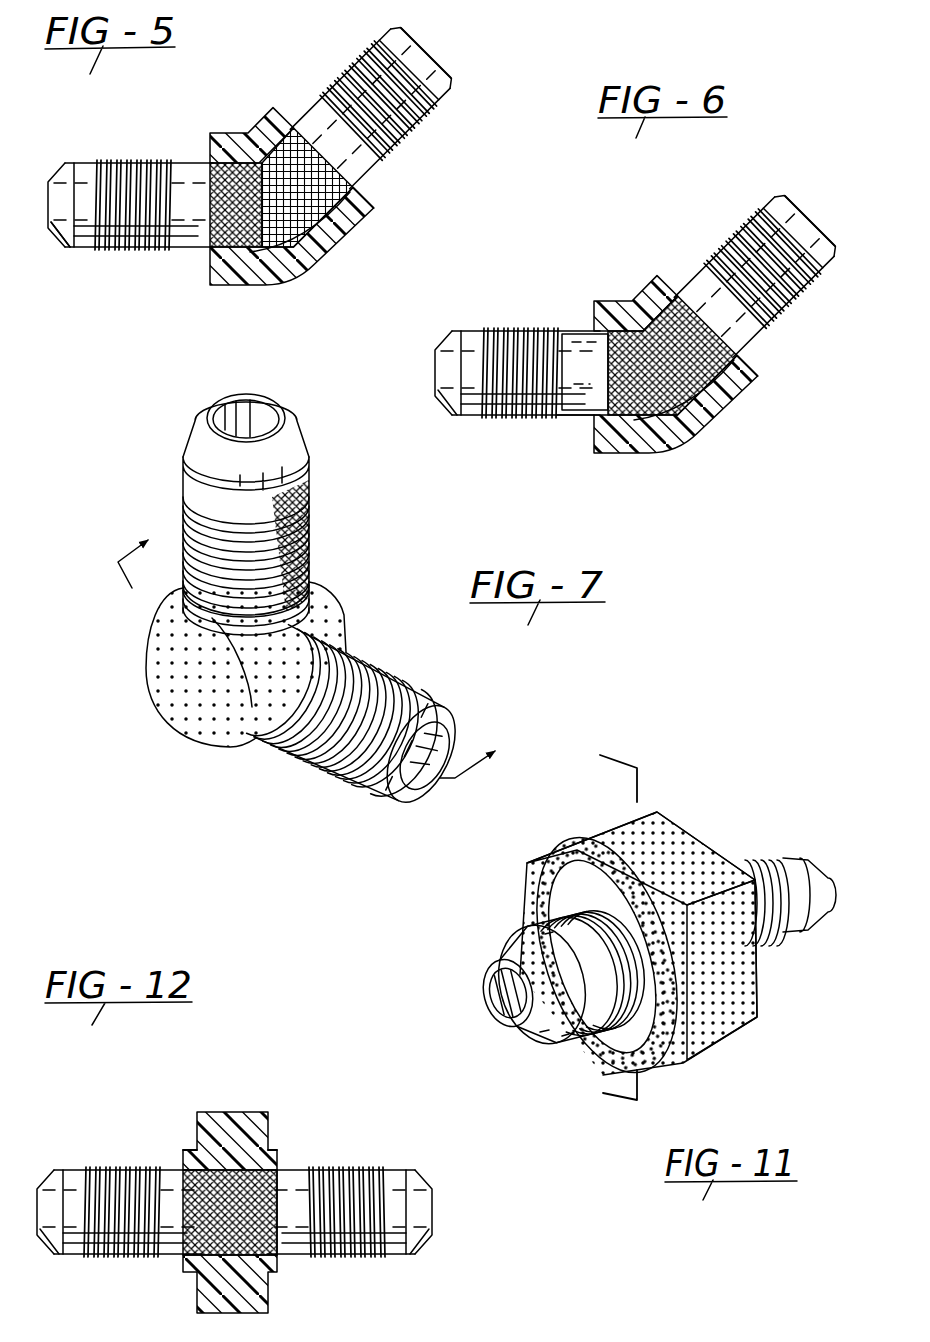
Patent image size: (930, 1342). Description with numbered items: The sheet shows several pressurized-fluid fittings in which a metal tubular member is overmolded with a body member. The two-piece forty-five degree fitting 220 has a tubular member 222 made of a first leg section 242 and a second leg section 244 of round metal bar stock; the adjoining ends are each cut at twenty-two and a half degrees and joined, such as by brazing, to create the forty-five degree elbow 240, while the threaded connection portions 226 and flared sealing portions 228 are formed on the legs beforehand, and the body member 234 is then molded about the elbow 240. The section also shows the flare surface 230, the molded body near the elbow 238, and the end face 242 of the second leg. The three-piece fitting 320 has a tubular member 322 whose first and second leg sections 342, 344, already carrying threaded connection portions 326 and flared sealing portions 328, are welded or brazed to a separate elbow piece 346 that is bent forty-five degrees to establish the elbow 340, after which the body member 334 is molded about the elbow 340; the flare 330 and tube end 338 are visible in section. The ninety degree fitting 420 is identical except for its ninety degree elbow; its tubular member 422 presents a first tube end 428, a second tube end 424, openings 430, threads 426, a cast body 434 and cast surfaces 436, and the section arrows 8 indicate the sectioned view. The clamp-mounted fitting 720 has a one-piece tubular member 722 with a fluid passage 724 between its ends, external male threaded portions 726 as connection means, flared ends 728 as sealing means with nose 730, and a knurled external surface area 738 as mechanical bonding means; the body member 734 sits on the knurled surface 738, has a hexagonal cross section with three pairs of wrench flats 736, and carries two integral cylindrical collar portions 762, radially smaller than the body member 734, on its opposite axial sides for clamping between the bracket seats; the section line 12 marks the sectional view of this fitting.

In FIG. 5, the fitting 220 is at (294, 176).
In FIG. 5, the two-piece tubular member 222 is at (299, 111).
In FIG. 5, the threaded connection portions 226 is at (430, 110).
In FIG. 5, the flared sealing portions 228 is at (48, 156).
In FIG. 5, the flare nose 230 is at (62, 190).
In FIG. 5, the body member 234 is at (377, 210).
In FIG. 5, the body bottom wall 238 is at (246, 276).
In FIG. 5, the forty-five degree elbow 240 is at (337, 232).
In FIG. 5, the first leg section 242 is at (447, 72).
In FIG. 5, the second leg section 244 is at (80, 248).
In FIG. 6, the fitting 320 is at (609, 327).
In FIG. 6, the three-piece tubular member 322 is at (695, 282).
In FIG. 6, the threaded connection portions 326 is at (800, 304).
In FIG. 6, the flared sealing portions 328 is at (438, 412).
In FIG. 6, the flare nose 330 is at (783, 197).
In FIG. 6, the body member 334 is at (737, 403).
In FIG. 6, the tube insert 338 is at (593, 316).
In FIG. 6, the forty-five degree elbow 340 is at (720, 418).
In FIG. 6, the first leg section 342 is at (781, 199).
In FIG. 6, the second leg section 344 is at (578, 420).
In FIG. 6, the elbow piece 346 is at (675, 445).
In FIG. 7, the fitting 420 is at (289, 599).
In FIG. 7, the tubular member 422 is at (312, 435).
In FIG. 7, the second tube end 424 is at (428, 782).
In FIG. 7, the threads 426 is at (316, 528).
In FIG. 7, the first tube end 428 is at (194, 408).
In FIG. 7, the opening 430 is at (207, 415).
In FIG. 7, the body 434 is at (143, 662).
In FIG. 7, the cast surface 436 is at (330, 592).
In FIG. 7, the section line 8 is at (313, 642).
In FIG. 11, the fitting 720 is at (625, 919).
In FIG. 12, the fitting 720 is at (263, 1170).
In FIG. 11, the one-piece tubular member 722 is at (603, 803).
In FIG. 12, the one-piece tubular member 722 is at (283, 1165).
In FIG. 11, the fluid passage 724 is at (498, 1012).
In FIG. 11, the external male threaded portions 726 is at (525, 925).
In FIG. 12, the external male threaded portions 726 is at (140, 1168).
In FIG. 11, the flared ends 728 is at (538, 1022).
In FIG. 12, the flared ends 728 is at (43, 1158).
In FIG. 11, the flare nose 730 is at (490, 962).
In FIG. 12, the flare nose 730 is at (52, 1250).
In FIG. 11, the body member 734 is at (757, 1008).
In FIG. 12, the body member 734 is at (233, 1112).
In FIG. 11, the wrench flats 736 is at (690, 830).
In FIG. 12, the knurled external surface area 738 is at (278, 1188).
In FIG. 11, the cylindrical collar portions 762 is at (662, 1045).
In FIG. 12, the cylindrical collar portions 762 is at (185, 1150).
In FIG. 11, the section line 12 is at (627, 934).